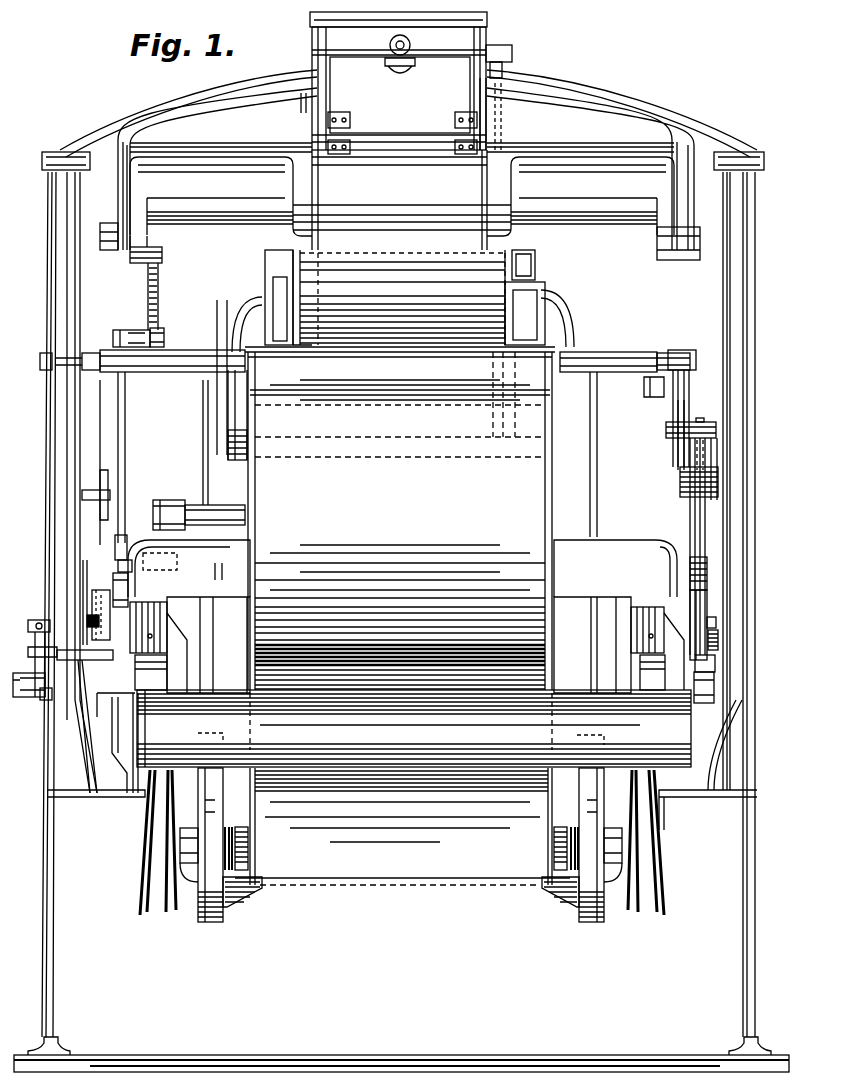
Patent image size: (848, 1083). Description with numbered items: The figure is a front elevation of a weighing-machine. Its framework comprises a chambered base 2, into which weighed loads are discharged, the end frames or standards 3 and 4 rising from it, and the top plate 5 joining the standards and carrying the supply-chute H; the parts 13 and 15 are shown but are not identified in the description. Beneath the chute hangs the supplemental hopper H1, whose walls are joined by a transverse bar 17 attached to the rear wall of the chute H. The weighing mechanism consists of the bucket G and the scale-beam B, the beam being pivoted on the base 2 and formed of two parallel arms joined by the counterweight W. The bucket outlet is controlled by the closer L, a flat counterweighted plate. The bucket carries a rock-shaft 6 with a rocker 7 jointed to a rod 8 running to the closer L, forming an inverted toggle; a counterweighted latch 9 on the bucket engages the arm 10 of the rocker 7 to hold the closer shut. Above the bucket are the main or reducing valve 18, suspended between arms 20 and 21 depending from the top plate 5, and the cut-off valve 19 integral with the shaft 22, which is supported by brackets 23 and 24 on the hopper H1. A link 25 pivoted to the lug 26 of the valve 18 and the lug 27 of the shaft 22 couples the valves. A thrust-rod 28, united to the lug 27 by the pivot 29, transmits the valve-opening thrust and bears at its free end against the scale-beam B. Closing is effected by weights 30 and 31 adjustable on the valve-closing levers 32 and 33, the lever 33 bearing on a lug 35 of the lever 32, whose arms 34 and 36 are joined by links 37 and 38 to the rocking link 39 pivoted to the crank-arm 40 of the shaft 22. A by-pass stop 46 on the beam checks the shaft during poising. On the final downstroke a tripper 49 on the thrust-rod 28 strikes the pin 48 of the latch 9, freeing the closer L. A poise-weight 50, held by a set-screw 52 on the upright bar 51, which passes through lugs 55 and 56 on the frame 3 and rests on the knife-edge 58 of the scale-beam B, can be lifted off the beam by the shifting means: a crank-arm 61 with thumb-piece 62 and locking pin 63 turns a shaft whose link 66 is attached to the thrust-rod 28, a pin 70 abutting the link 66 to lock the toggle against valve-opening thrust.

The chambered base 2 is at (401, 1026).
The end frame 3 is at (62, 432).
The end frame 4 is at (742, 525).
The top plate 5 is at (408, 160).
The rock-shaft 6 is at (390, 456).
The rocker 7 is at (224, 482).
The rod 8 is at (207, 460).
The latch 9 is at (172, 500).
The arm 10 is at (238, 544).
The frame cross-piece 13 is at (402, 200).
The guide plate 15 is at (400, 95).
The transverse bar 17 is at (528, 262).
The main valve 18 is at (400, 298).
The cut-off valve 19 is at (388, 400).
The arm 20 is at (116, 242).
The arm 21 is at (688, 236).
The cut-off-valve shaft 22 is at (175, 374).
The bracket 23 is at (250, 308).
The bracket 24 is at (570, 327).
The link 25 is at (158, 285).
The lug 26 is at (140, 240).
The lug 27 is at (135, 341).
The thrust-rod 28 is at (125, 435).
The pivot 29 is at (164, 338).
The weight 30 is at (705, 455).
The weight 31 is at (716, 691).
The valve-closing lever 32 is at (700, 528).
The valve-closing lever 33 is at (716, 623).
The arm 34 is at (718, 640).
The lug 35 is at (712, 611).
The arm 36 is at (690, 572).
The link 37 is at (686, 405).
The link 38 is at (712, 510).
The rocking link 39 is at (676, 407).
The crank-arm 40 is at (655, 378).
The by-pass stop 46 is at (716, 663).
The pin 48 is at (120, 565).
The tripper 49 is at (120, 538).
The poise-weight 50 is at (92, 598).
The upright bar 51 is at (108, 478).
The set-screw 52 is at (88, 620).
The lug 55 is at (110, 495).
The lug 56 is at (78, 652).
The knife-edge support 58 is at (76, 726).
The crank-arm 61 is at (36, 663).
The thumb-piece 62 is at (32, 697).
The pin 63 is at (47, 700).
The link 66 is at (160, 618).
The pin 70 is at (128, 584).
The scale-beam B is at (150, 680).
The bucket G is at (400, 521).
The supply-chute H is at (411, 83).
The supplemental hopper H1 is at (530, 300).
The closer L is at (565, 895).
The counterweight W is at (414, 728).